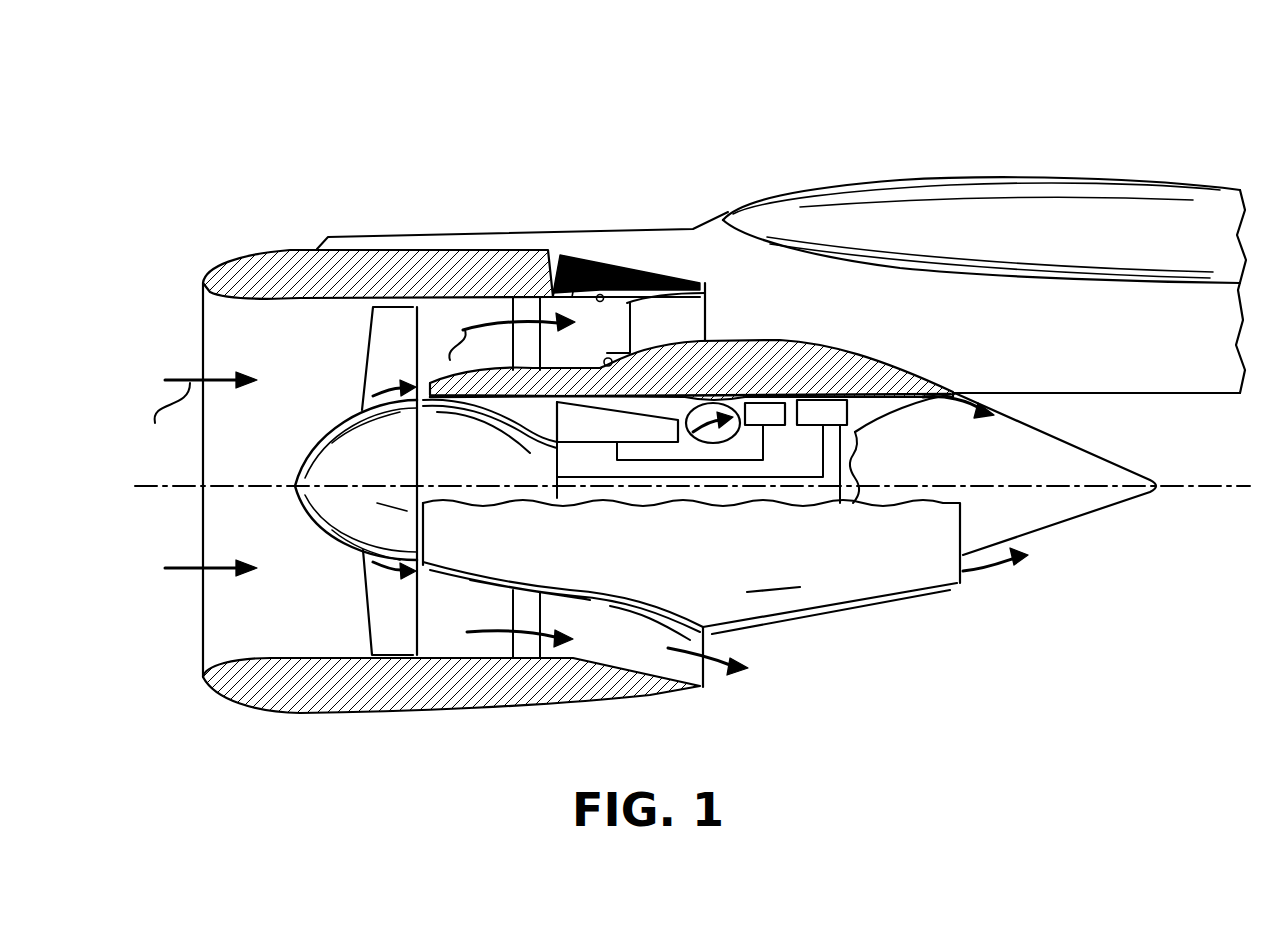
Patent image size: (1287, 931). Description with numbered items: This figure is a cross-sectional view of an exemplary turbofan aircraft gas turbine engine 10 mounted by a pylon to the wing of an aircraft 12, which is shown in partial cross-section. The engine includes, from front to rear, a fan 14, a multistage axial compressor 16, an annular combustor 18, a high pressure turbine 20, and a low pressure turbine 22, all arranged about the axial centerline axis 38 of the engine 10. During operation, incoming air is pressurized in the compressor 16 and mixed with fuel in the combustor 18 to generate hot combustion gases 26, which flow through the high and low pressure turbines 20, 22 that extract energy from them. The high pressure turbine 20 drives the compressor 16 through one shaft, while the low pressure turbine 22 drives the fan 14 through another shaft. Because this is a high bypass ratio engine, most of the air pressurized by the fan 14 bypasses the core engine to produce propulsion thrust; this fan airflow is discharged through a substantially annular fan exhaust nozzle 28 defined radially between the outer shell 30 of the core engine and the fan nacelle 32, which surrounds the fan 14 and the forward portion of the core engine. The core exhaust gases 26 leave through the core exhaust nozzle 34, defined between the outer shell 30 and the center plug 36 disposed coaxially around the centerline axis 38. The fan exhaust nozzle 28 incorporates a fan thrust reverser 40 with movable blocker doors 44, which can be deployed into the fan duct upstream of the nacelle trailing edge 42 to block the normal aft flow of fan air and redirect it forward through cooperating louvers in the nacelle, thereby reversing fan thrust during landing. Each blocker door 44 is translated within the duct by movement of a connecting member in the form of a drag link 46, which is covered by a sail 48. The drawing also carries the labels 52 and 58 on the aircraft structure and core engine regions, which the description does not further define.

The turbofan aircraft gas turbine engine 10 is at (292, 216).
The aircraft 12 is at (845, 178).
The fan 14 is at (365, 598).
The multistage axial compressor 16 is at (597, 427).
The annular combustor 18 is at (718, 445).
The high pressure turbine 20 is at (780, 438).
The low pressure turbine 22 is at (838, 427).
The hot combustion gases 26 is at (978, 573).
The fan exhaust nozzle 28 is at (673, 262).
The outer shell 30 is at (870, 372).
The fan nacelle 32 is at (547, 262).
The core exhaust nozzle 34 is at (958, 370).
The center plug 36 is at (1097, 440).
The axial centerline axis 38 is at (1184, 490).
The fan thrust reverser 40 is at (618, 638).
The nacelle trailing edge 42 is at (705, 633).
The blocker door 44 is at (705, 293).
The drag link 46 is at (600, 294).
The sail 48 is at (608, 340).
The aircraft structure 52 is at (1170, 343).
The core engine 58 is at (936, 548).